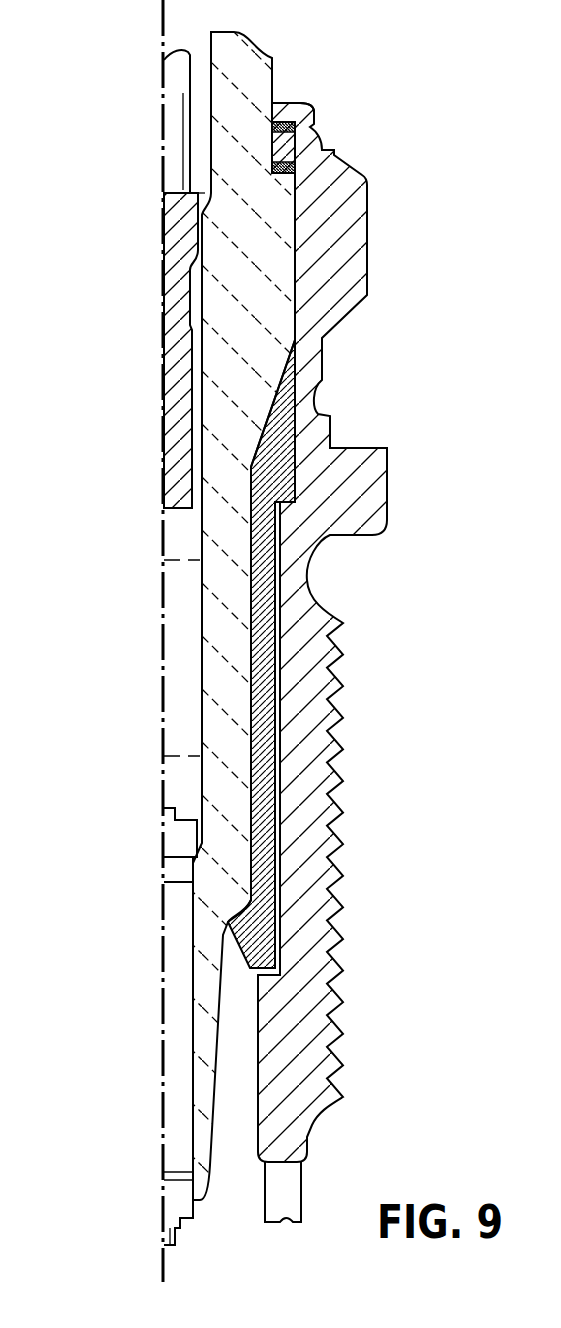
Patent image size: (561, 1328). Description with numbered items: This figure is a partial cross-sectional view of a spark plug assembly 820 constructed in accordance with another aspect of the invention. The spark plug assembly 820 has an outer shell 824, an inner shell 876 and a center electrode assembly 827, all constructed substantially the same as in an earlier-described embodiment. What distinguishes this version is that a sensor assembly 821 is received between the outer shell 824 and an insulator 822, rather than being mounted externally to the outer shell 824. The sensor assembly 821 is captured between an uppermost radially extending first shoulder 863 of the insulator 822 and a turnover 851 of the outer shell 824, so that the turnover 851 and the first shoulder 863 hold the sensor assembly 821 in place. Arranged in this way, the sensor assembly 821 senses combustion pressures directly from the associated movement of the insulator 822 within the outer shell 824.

The spark plug assembly 820 is at (352, 53).
The center electrode assembly 827 is at (150, 98).
The insulator 822 is at (200, 535).
The first shoulder 863 is at (273, 174).
The turnover 851 is at (304, 100).
The sensor assembly 821 is at (327, 130).
The inner shell 876 is at (250, 690).
The outer shell 824 is at (336, 887).